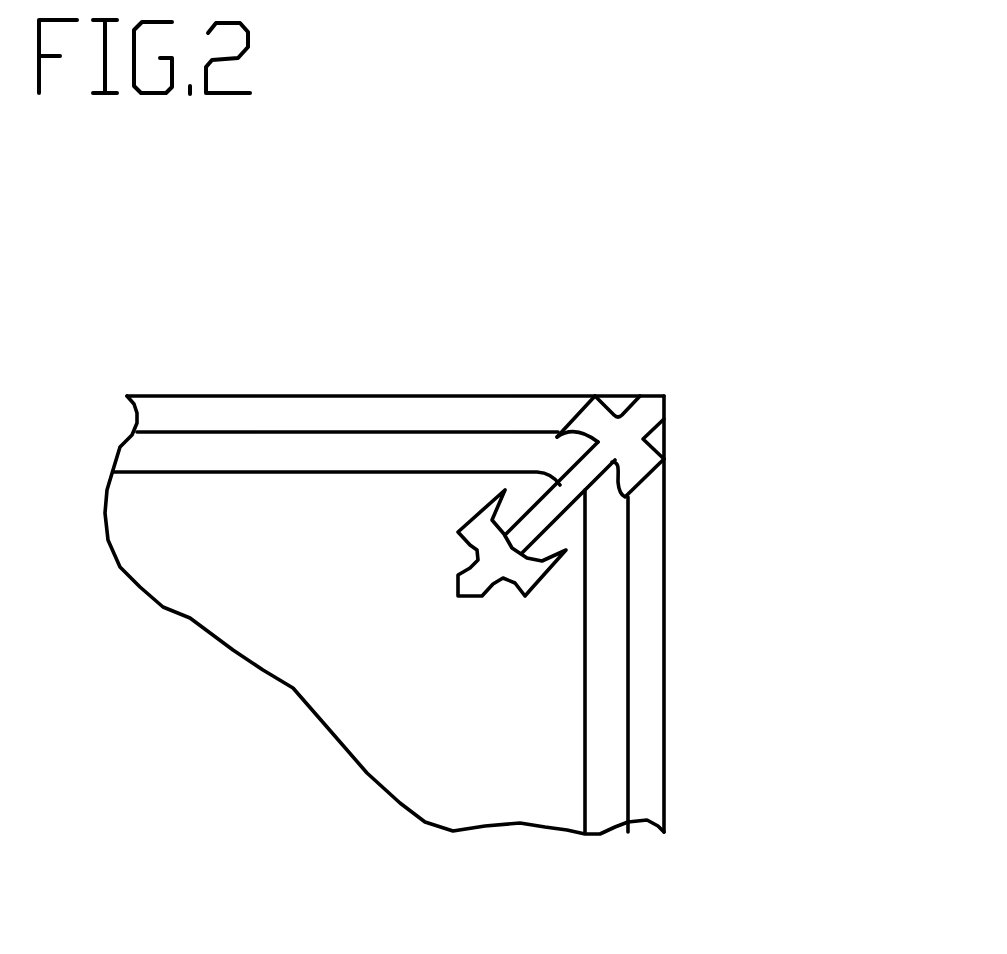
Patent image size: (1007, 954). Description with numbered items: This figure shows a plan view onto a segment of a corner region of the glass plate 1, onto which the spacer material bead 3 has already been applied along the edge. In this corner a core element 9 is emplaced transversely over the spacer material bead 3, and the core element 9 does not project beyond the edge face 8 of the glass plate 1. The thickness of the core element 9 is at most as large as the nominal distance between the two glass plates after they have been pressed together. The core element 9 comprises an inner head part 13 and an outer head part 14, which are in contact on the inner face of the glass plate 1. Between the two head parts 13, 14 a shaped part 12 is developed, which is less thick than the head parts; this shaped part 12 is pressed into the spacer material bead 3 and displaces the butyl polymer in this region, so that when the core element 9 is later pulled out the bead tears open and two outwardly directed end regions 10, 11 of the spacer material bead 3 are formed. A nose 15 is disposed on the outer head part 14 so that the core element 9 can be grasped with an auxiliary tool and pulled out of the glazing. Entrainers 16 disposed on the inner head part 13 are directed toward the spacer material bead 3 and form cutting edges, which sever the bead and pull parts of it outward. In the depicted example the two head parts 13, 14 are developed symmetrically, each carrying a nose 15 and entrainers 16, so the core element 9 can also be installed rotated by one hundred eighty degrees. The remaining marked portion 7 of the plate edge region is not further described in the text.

The glass plate 1 is at (340, 642).
The spacer material bead 3 is at (192, 453).
The outer wall 7 is at (292, 410).
The edge face 8 is at (217, 395).
The core element 9 is at (665, 443).
The end region 10 is at (558, 433).
The end region 11 is at (600, 493).
The shaped part 12 is at (584, 507).
The inner head part 13 is at (518, 570).
The outer head part 14 is at (597, 413).
The nose 15 is at (653, 410).
The entrainers 16 is at (553, 560).